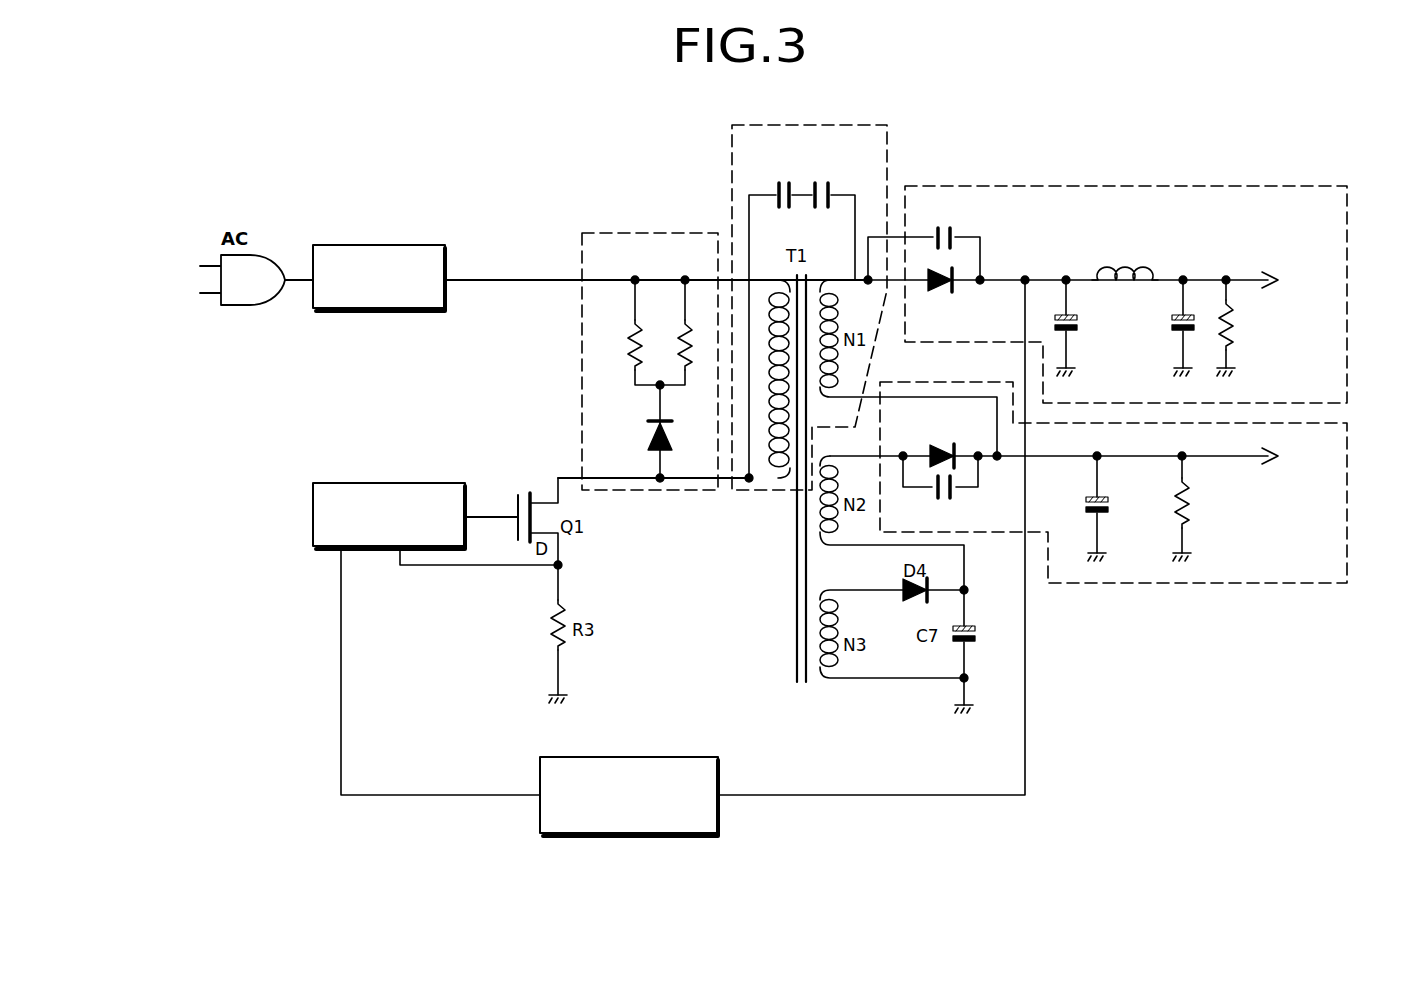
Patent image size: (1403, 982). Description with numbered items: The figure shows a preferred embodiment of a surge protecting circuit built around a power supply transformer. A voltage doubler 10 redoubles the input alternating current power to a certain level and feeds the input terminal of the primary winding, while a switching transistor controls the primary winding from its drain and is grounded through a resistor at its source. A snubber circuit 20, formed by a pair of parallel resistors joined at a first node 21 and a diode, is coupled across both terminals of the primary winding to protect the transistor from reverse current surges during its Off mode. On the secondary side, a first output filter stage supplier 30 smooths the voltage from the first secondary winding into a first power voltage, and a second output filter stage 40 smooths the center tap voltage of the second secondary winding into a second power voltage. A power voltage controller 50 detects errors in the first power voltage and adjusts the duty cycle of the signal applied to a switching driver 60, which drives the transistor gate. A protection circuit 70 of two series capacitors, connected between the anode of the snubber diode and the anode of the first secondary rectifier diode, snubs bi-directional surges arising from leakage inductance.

The voltage doubler 10 is at (372, 312).
The snubber circuit 20 is at (620, 231).
The first node 21 is at (656, 388).
The first output filter stage supplier 30 is at (1125, 186).
The second output filter stage 40 is at (1190, 585).
The power voltage controller 50 is at (615, 837).
The switching driver 60 is at (378, 483).
The protection circuit 70 is at (887, 153).